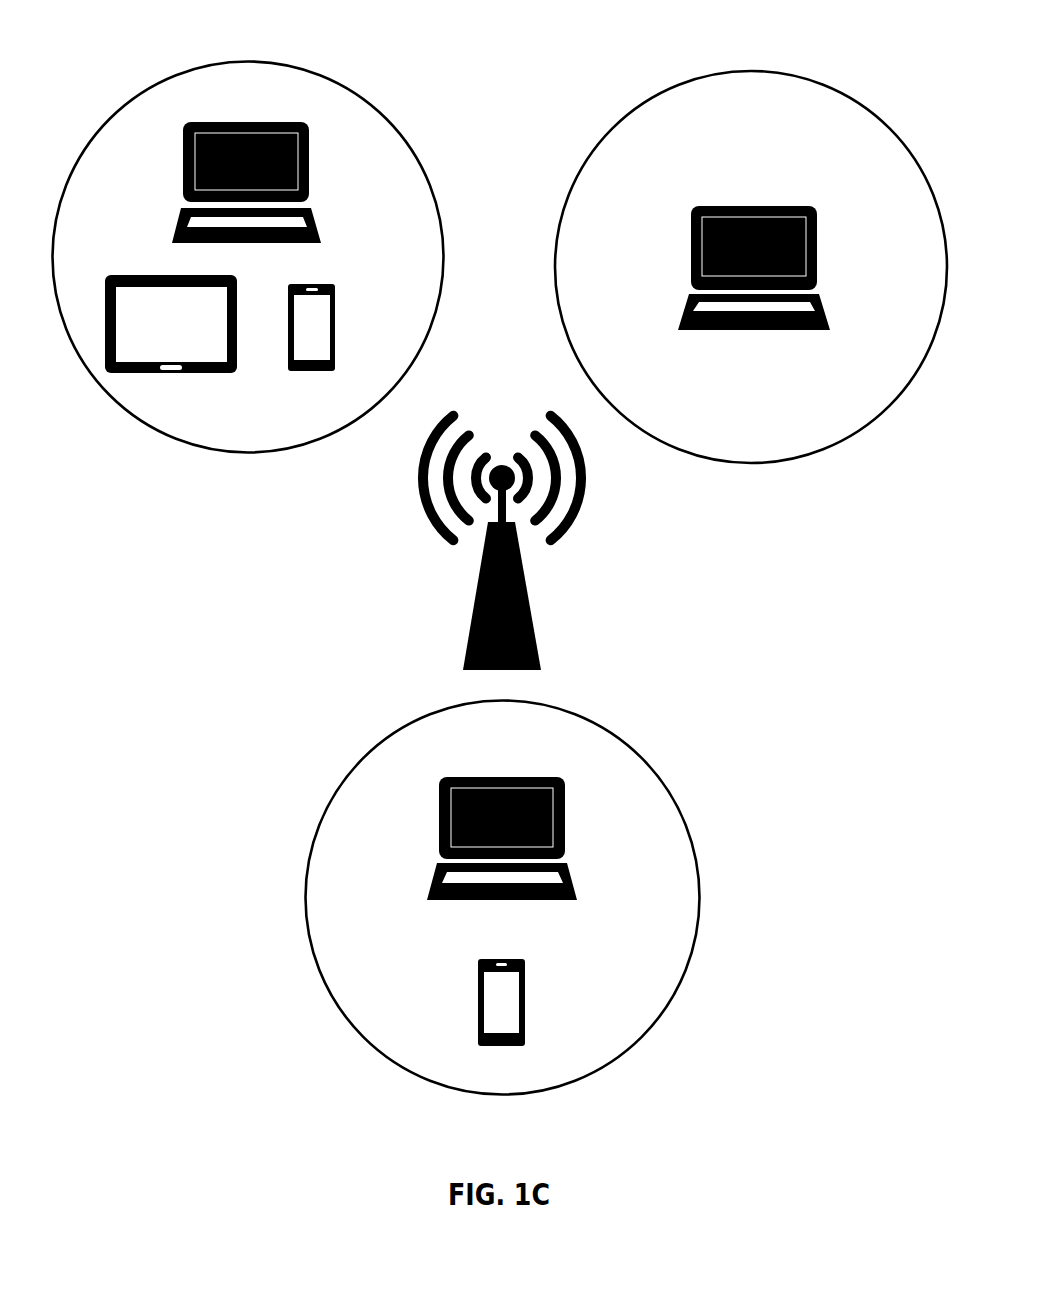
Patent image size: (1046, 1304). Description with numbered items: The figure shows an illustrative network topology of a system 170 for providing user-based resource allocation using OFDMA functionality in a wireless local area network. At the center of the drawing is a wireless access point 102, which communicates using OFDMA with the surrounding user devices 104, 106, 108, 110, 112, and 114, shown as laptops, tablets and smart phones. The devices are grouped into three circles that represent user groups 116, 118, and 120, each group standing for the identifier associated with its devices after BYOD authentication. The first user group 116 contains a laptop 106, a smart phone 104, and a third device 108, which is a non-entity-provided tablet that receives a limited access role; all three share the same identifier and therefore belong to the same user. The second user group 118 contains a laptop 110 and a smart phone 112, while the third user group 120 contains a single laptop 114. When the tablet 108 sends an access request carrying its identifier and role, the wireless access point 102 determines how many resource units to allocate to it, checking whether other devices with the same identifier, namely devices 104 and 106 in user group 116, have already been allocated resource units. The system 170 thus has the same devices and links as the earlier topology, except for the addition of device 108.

The system 170 is at (519, 50).
The wireless access point 102 is at (535, 636).
The user device 104 is at (336, 323).
The user device 106 is at (183, 194).
The third device 108 is at (169, 373).
The user device 110 is at (438, 851).
The user device 112 is at (525, 1009).
The user device 114 is at (688, 285).
The user group 116 is at (245, 453).
The user group 118 is at (362, 1042).
The user group 120 is at (752, 463).